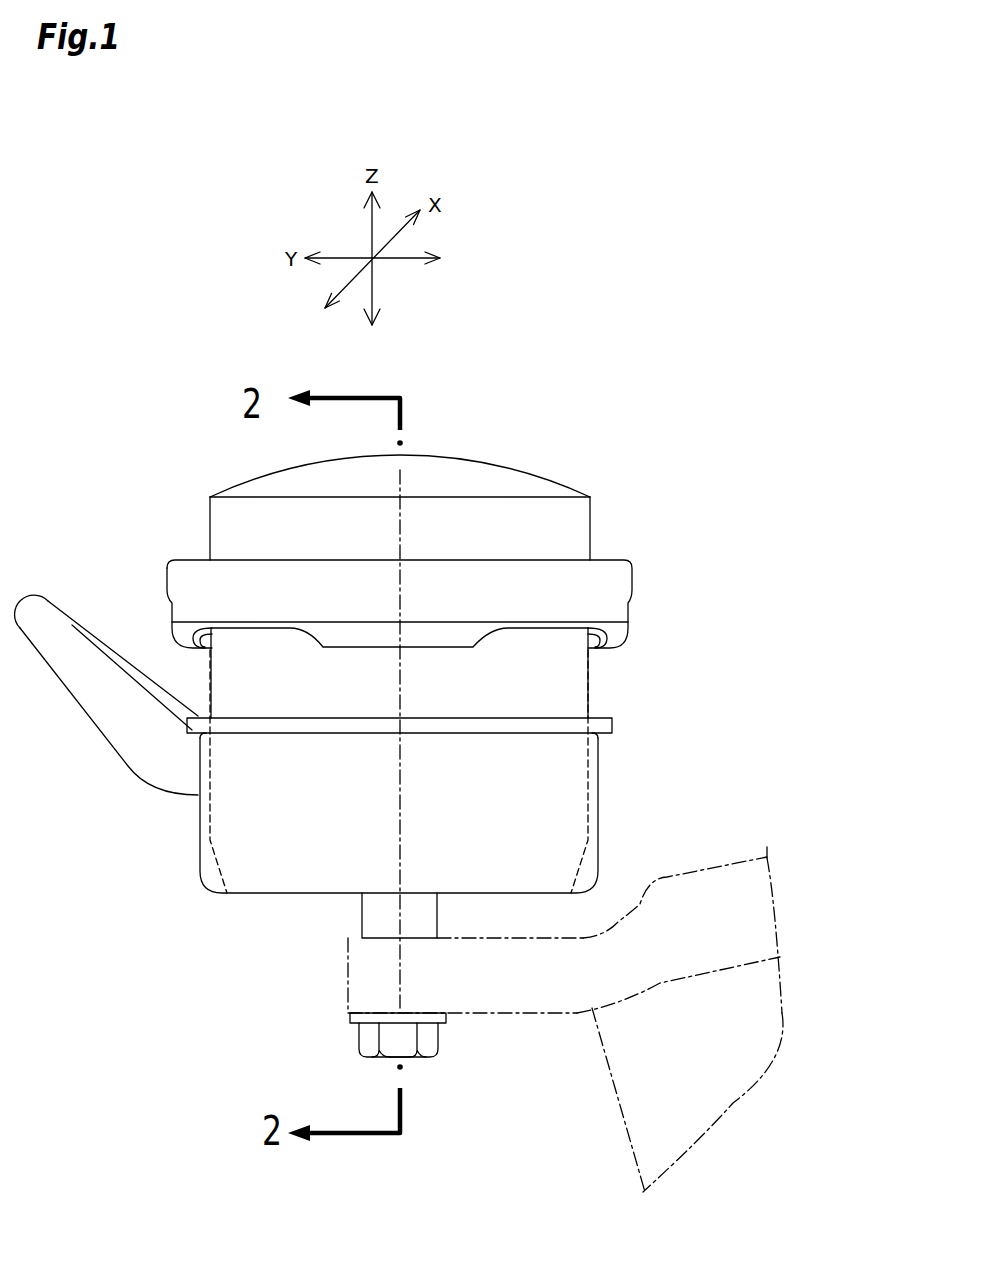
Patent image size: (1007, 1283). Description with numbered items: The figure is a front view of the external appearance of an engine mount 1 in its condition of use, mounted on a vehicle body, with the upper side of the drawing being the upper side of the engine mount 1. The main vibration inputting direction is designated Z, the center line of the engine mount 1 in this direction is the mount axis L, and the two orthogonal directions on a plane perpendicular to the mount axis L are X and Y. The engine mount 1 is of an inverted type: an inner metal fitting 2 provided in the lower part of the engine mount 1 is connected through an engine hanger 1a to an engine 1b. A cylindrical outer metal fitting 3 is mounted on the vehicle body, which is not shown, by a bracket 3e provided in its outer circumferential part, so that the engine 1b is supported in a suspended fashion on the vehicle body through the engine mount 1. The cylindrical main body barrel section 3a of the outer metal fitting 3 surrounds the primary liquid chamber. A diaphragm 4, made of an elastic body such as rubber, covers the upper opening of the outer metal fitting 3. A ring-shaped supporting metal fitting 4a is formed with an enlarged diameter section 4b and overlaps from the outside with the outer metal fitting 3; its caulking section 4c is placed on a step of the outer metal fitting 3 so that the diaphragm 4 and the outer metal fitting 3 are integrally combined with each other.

The engine mount 1 is at (178, 485).
The engine hanger 1a is at (517, 1000).
The engine 1b is at (632, 1080).
The inner metal fitting 2 is at (377, 922).
The outer metal fitting 3 is at (188, 847).
The main body barrel section 3a is at (568, 707).
The bracket 3e is at (75, 662).
The diaphragm 4 is at (490, 477).
The supporting metal fitting 4a is at (608, 560).
The enlarged diameter section 4b is at (620, 577).
The caulking section 4c is at (610, 650).
The mount axis L is at (403, 521).